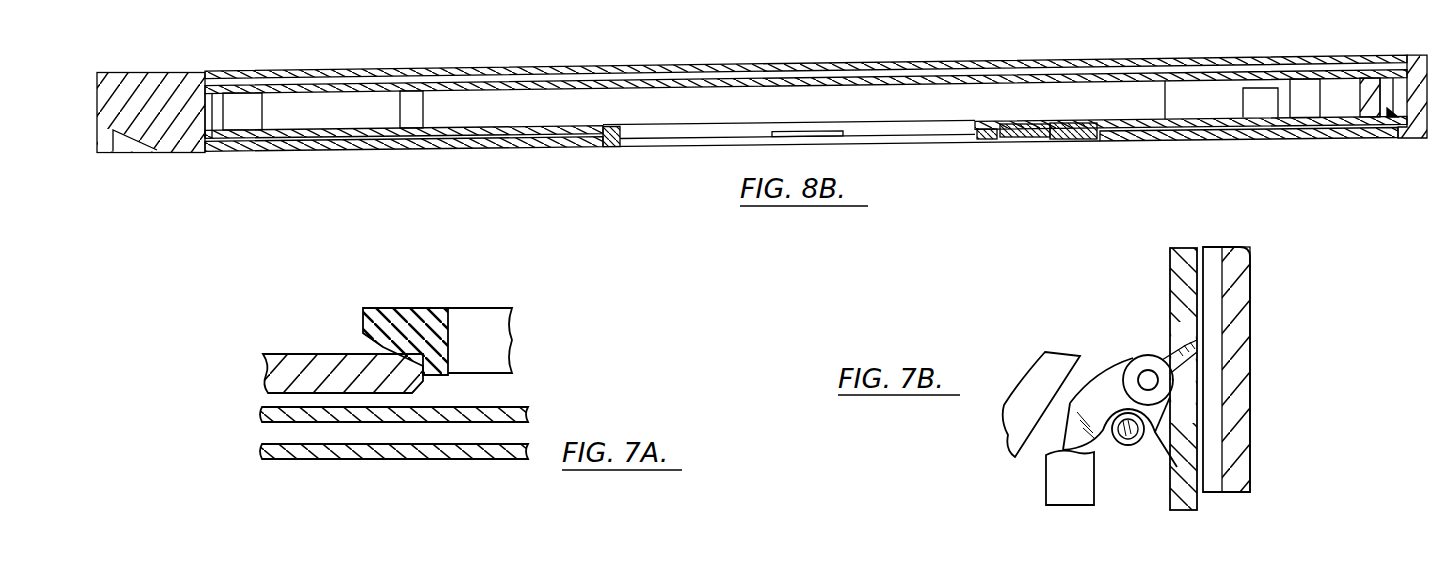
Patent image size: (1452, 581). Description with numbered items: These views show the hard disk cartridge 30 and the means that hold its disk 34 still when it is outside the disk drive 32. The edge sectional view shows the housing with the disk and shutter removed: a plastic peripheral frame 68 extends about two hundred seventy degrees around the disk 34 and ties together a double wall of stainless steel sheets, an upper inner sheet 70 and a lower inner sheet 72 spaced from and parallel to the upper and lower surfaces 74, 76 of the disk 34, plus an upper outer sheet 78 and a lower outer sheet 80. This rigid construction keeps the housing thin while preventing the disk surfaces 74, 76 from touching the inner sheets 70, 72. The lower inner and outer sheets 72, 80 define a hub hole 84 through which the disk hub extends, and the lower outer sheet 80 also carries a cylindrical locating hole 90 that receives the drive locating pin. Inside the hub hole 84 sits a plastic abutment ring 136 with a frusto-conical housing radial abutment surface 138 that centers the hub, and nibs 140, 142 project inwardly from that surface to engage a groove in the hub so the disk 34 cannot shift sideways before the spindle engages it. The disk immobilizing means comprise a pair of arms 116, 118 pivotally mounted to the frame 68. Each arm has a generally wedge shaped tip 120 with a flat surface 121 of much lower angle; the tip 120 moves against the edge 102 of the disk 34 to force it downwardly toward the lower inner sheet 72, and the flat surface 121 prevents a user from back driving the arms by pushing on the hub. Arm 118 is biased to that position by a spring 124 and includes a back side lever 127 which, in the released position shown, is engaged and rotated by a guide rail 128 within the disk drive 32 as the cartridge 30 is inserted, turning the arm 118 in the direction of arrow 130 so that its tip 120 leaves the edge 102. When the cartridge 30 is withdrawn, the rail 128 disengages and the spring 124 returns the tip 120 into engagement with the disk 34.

In FIG. 8B, the hard disk cartridge 30 is at (925, 50).
In FIG. 7B, the hard disk cartridge 30 is at (1173, 252).
In FIG. 7B, the disk drive 32 is at (1258, 290).
In FIG. 7A, the disk 34 is at (277, 352).
In FIG. 7B, the disk 34 is at (1037, 368).
In FIG. 8B, the peripheral frame 68 is at (153, 72).
In FIG. 7B, the peripheral frame 68 is at (1177, 273).
In FIG. 8B, the upper inner sheet 70 is at (358, 86).
In FIG. 8B, the lower inner sheet 72 is at (455, 140).
In FIG. 7A, the lower inner sheet 72 is at (266, 430).
In FIG. 7A, the upper surface of the disk 74 is at (262, 352).
In FIG. 7A, the lower surface of the disk 76 is at (272, 397).
In FIG. 8B, the upper outer sheet 78 is at (295, 70).
In FIG. 8B, the lower outer sheet 80 is at (330, 152).
In FIG. 7A, the lower outer sheet 80 is at (265, 460).
In FIG. 8B, the hub hole 84 is at (607, 147).
In FIG. 8B, the cylindrical locating hole 90 is at (1058, 143).
In FIG. 7A, the edge of the disk 102 is at (423, 378).
In FIG. 7B, the edge of the disk 102 is at (1040, 443).
In FIG. 7A, the arm 116 is at (503, 334).
In FIG. 7B, the arm 118 is at (1107, 372).
In FIG. 7A, the wedge shaped tip 120 is at (421, 307).
In FIG. 7B, the wedge shaped tip 120 is at (1060, 492).
In FIG. 7A, the flat surface 121 is at (380, 345).
In FIG. 7B, the spring 124 is at (1125, 448).
In FIG. 7B, the back side lever 127 is at (1205, 347).
In FIG. 7B, the guide rail 128 is at (1213, 463).
In FIG. 7B, the arrow 130 is at (1145, 333).
In FIG. 8B, the plastic abutment ring 136 is at (990, 140).
In FIG. 8B, the housing radial abutment surface 138 is at (698, 145).
In FIG. 8B, the nib 140 is at (958, 140).
In FIG. 8B, the nib 142 is at (788, 131).